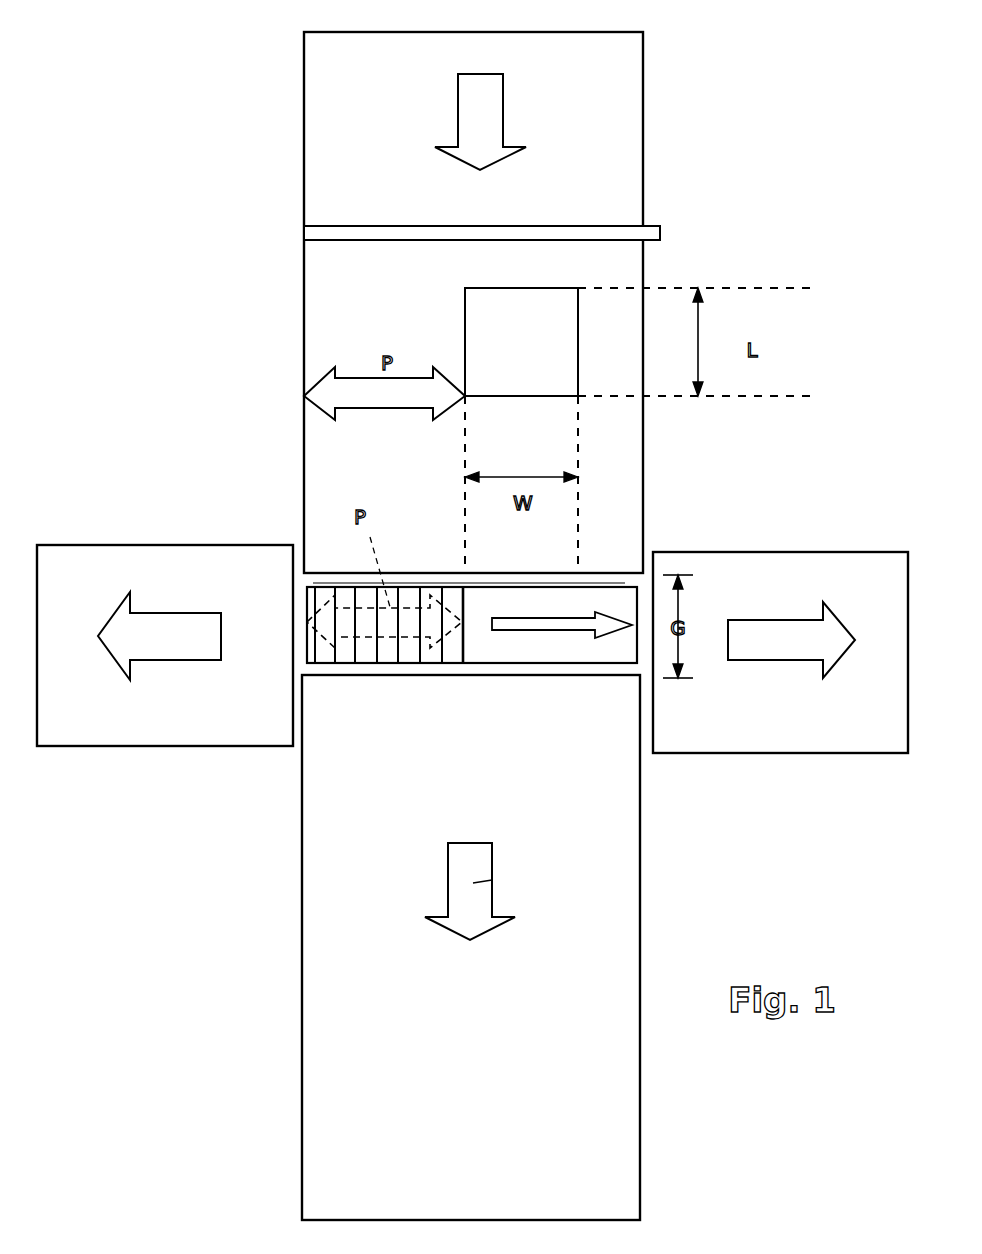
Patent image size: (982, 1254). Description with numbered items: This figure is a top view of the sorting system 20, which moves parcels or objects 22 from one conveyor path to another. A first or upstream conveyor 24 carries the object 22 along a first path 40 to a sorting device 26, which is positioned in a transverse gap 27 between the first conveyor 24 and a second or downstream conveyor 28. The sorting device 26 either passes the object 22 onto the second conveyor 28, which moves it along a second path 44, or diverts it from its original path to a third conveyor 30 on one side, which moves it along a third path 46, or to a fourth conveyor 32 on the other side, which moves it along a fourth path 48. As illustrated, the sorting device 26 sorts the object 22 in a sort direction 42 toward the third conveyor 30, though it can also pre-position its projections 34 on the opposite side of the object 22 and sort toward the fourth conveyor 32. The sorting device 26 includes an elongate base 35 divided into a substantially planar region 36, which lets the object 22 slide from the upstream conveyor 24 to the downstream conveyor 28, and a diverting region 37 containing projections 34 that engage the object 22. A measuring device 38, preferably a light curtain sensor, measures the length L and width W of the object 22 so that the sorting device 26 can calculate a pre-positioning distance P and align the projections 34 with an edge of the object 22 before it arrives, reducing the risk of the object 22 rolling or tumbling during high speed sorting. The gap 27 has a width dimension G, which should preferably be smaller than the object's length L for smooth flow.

The sorting system 20 is at (742, 63).
The object 22 is at (483, 323).
The first conveyor 24 is at (632, 158).
The sorting device 26 is at (630, 578).
The transverse gap 27 is at (313, 578).
The second conveyor 28 is at (615, 819).
The third conveyor 30 is at (787, 560).
The fourth conveyor 32 is at (173, 558).
The projections 34 is at (373, 663).
The elongate base 35 is at (507, 663).
The substantially planar region 36 is at (518, 650).
The diverting region 37 is at (412, 664).
The measuring device 38 is at (660, 230).
The first path 40 is at (505, 106).
The sort direction 42 is at (568, 618).
The second path 44 is at (447, 895).
The third path 46 is at (790, 620).
The fourth path 48 is at (168, 613).